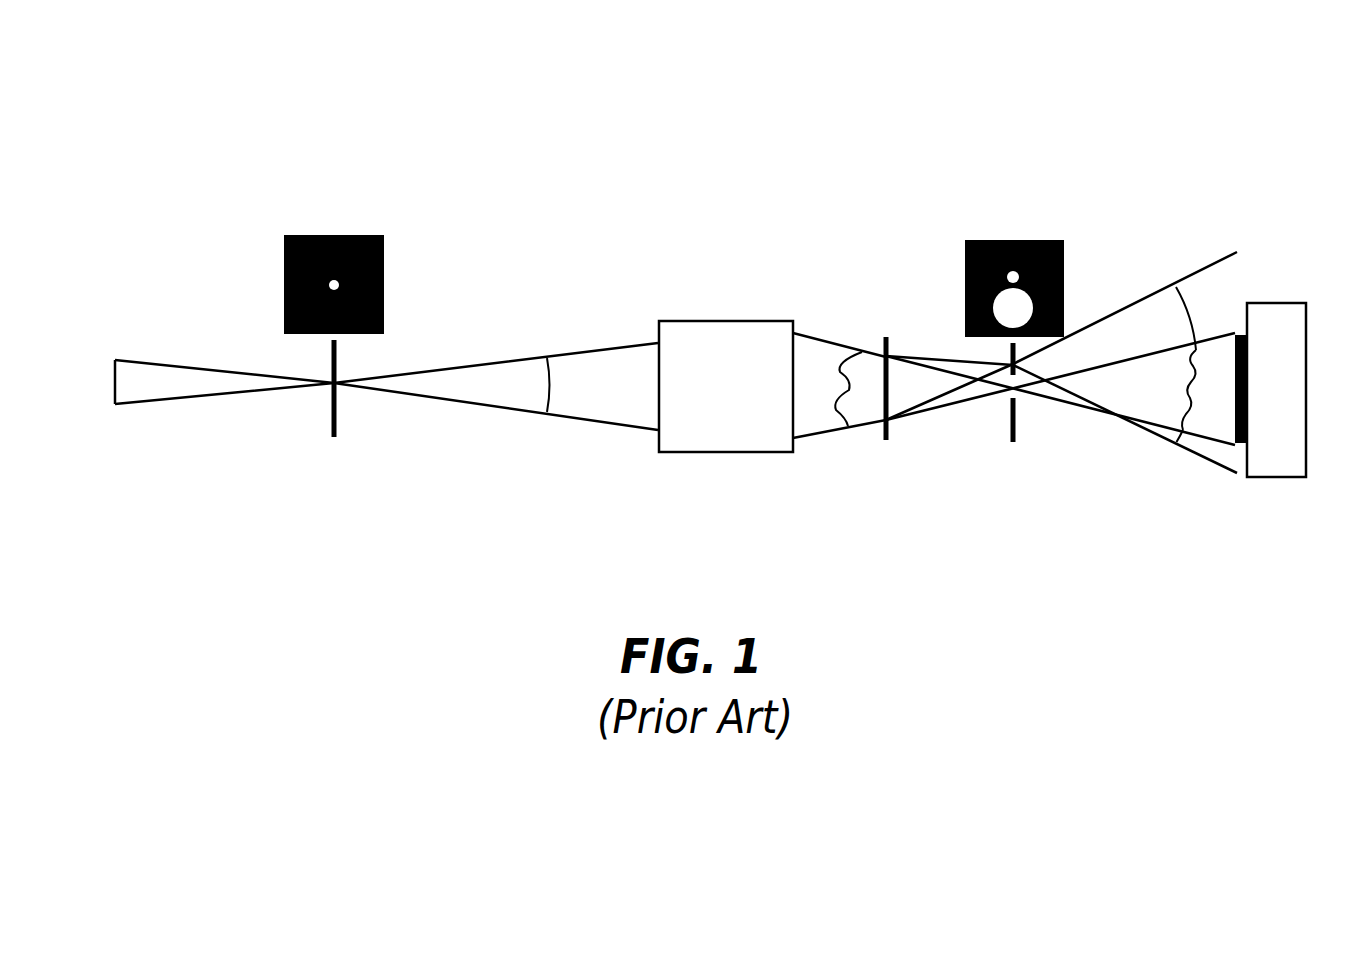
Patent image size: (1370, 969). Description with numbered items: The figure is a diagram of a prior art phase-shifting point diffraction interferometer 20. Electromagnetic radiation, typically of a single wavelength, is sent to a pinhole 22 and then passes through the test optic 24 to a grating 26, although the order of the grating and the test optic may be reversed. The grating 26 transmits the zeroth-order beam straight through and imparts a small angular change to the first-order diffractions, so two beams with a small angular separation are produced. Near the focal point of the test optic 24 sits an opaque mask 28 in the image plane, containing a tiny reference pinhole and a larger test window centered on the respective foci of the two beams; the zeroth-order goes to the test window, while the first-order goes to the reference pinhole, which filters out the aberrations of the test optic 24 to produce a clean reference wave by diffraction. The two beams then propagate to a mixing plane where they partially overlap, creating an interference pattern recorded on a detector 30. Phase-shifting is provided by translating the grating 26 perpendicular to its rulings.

The prior art optical spectrometer system 20 is at (634, 108).
The pinhole 22 is at (337, 418).
The test optic 24 is at (707, 321).
The grating 26 is at (886, 336).
The mask 28 is at (1018, 422).
The detector 30 is at (1262, 303).